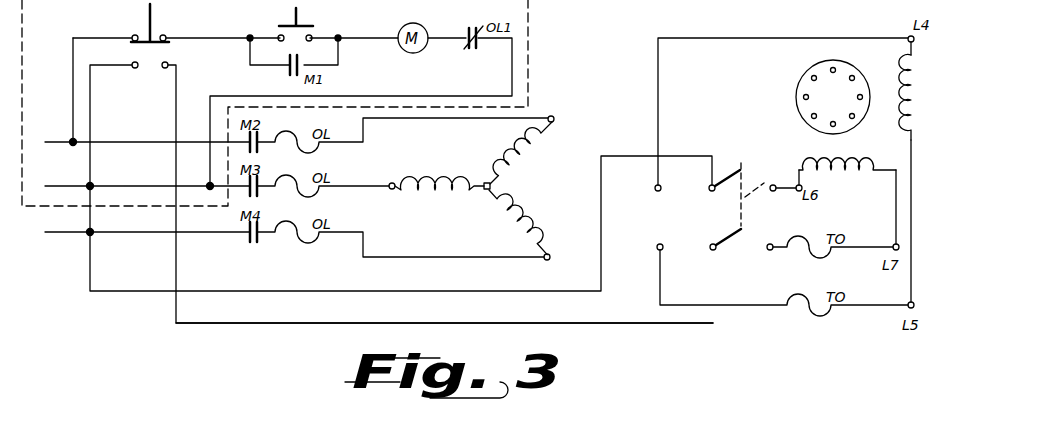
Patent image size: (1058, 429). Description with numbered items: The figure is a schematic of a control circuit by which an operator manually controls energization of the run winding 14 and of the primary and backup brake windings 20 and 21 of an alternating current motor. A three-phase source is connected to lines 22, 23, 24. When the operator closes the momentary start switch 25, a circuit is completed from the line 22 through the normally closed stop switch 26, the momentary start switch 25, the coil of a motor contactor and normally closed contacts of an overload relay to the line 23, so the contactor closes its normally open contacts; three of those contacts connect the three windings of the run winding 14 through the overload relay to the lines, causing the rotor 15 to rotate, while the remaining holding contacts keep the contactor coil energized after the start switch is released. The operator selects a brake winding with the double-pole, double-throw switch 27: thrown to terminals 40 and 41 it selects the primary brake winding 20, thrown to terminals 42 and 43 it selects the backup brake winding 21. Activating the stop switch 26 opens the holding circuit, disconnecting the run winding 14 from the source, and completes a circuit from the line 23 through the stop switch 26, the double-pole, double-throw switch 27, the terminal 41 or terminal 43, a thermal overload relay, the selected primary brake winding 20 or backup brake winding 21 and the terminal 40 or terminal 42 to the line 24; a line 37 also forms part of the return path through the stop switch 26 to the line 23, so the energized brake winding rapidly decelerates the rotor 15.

The run winding 14 is at (447, 218).
The rotor 15 is at (833, 97).
The primary brake winding 20 is at (891, 70).
The backup brake winding 21 is at (852, 175).
The line 22 is at (63, 140).
The line 23 is at (74, 185).
The line 24 is at (52, 233).
The momentary start switch 25 is at (304, 19).
The stop switch 26 is at (160, 25).
The double-pole, double-throw switch 27 is at (740, 158).
The line 37 is at (224, 323).
The terminal 40 is at (657, 194).
The terminal 41 is at (663, 240).
The terminal 42 is at (784, 170).
The terminal 43 is at (768, 252).